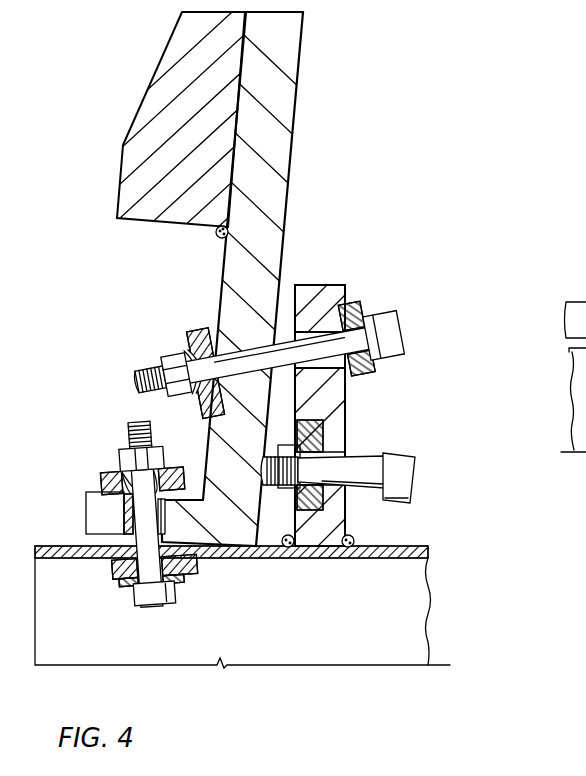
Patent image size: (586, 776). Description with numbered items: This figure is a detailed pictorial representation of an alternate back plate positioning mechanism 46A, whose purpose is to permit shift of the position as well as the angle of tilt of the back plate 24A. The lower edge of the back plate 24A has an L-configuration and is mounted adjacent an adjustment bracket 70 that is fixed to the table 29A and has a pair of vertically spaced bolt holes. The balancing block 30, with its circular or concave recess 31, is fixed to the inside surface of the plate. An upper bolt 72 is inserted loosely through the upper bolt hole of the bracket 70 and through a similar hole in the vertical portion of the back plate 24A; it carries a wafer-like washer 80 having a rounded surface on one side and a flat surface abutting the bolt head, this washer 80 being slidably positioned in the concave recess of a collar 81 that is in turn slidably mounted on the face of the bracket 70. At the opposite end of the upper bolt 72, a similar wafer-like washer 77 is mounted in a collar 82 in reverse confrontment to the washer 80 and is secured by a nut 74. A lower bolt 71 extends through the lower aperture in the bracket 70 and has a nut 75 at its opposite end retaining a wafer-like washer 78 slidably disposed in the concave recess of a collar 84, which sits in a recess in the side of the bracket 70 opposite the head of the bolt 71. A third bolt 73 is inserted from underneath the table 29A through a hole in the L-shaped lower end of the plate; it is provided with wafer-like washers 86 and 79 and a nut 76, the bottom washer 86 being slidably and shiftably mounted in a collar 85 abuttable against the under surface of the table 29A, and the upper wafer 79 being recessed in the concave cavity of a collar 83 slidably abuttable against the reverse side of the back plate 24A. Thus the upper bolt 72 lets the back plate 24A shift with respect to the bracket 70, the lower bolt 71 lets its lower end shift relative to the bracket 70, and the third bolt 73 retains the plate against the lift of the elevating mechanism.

The back plate 24A is at (298, 75).
The table 29A is at (382, 558).
The balancing block 30 is at (137, 223).
The concave recess 31 is at (152, 92).
The back plate positioning mechanism 46A is at (355, 202).
The adjustment bracket 70 is at (328, 285).
The lower bolt 71 is at (378, 455).
The upper bolt 72 is at (325, 368).
The third bolt 73 is at (140, 542).
The nut 74 is at (168, 350).
The nut 75 is at (283, 495).
The nut 76 is at (117, 457).
The wafer-like washer 77 is at (182, 340).
The wafer-like washer 78 is at (325, 500).
The upper wafer-like washer 79 is at (173, 472).
The wafer-like washer 80 is at (380, 370).
The collar 81 is at (355, 297).
The collar 82 is at (208, 330).
The collar 83 is at (95, 472).
The collar 84 is at (340, 537).
The collar 85 is at (197, 572).
The bottom wafer-like washer 86 is at (177, 583).